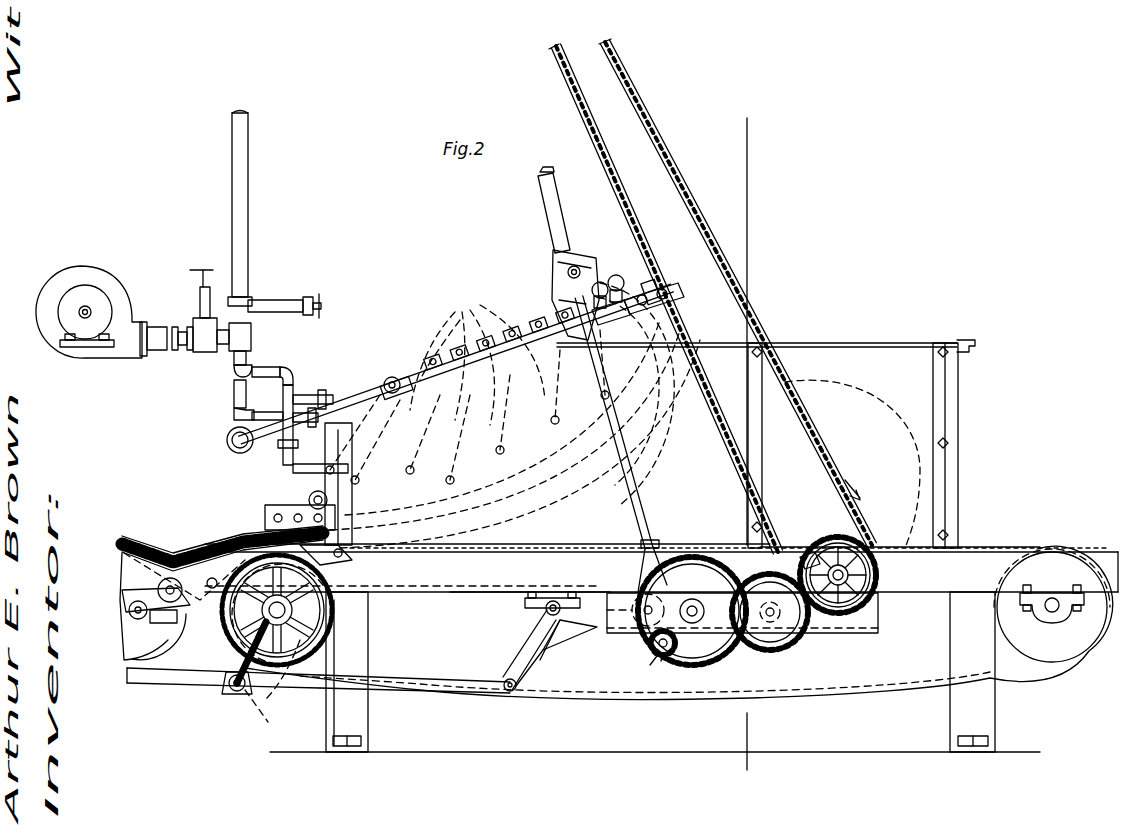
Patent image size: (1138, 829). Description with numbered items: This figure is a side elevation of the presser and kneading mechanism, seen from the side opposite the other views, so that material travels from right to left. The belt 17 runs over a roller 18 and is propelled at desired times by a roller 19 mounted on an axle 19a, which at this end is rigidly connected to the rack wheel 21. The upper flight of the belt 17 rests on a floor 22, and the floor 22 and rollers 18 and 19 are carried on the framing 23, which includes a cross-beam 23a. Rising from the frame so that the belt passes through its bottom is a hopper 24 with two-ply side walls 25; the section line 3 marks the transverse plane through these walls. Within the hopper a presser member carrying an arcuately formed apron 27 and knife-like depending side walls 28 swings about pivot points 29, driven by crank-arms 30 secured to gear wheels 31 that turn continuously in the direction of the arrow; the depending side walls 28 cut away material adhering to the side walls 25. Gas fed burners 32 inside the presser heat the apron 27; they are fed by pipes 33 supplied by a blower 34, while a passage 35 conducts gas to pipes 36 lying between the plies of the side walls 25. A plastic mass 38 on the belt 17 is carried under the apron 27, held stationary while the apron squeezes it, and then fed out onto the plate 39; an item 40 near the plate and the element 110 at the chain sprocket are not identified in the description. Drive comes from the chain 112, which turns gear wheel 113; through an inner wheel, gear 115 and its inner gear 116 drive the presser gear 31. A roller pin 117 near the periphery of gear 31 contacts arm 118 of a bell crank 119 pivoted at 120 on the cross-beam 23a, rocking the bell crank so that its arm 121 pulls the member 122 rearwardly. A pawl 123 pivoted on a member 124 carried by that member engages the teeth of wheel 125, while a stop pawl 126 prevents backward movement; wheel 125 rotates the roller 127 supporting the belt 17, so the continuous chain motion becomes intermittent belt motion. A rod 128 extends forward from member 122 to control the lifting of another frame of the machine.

The section line 3- 3 is at (775, 132).
The belt 17 is at (1052, 538).
The roller 18 is at (1084, 638).
The roller 19 is at (345, 640).
The axle 19a is at (335, 640).
The rack wheel 21 is at (345, 603).
The floor 22 is at (970, 546).
The framing 23 is at (360, 641).
The cross-beam 23a is at (540, 570).
The hopper 24 is at (536, 316).
The side walls 25 is at (842, 348).
The apron 27 is at (687, 296).
The depending side walls 28 is at (647, 394).
The pivot points 29 is at (309, 500).
The crank-arms 30 is at (637, 497).
The gear wheels 31 is at (592, 254).
The gas fed burners 32 is at (466, 319).
The pipes 33 is at (236, 150).
The blower 34 is at (104, 274).
The passage 35 is at (294, 463).
The pipes 36 is at (527, 546).
The plastic mass 38 is at (872, 428).
The plate 39 is at (202, 572).
The material 40 is at (246, 548).
The chain sprocket 110 is at (845, 618).
The chain 112 is at (759, 297).
The gear wheel 113 is at (819, 546).
The gear 115 is at (805, 630).
The inner gear 116 is at (705, 648).
The roller pin 117 is at (660, 650).
The arm 118 is at (627, 613).
The bell crank 119 is at (575, 640).
The pivot 120 is at (547, 610).
The arm 121 is at (508, 690).
The member 122 is at (453, 688).
The pawl 123 is at (278, 696).
The member 124 is at (238, 691).
The wheel 125 is at (345, 584).
The stop pawl 126 is at (338, 557).
The roller 127 is at (240, 616).
The rod 128 is at (176, 680).